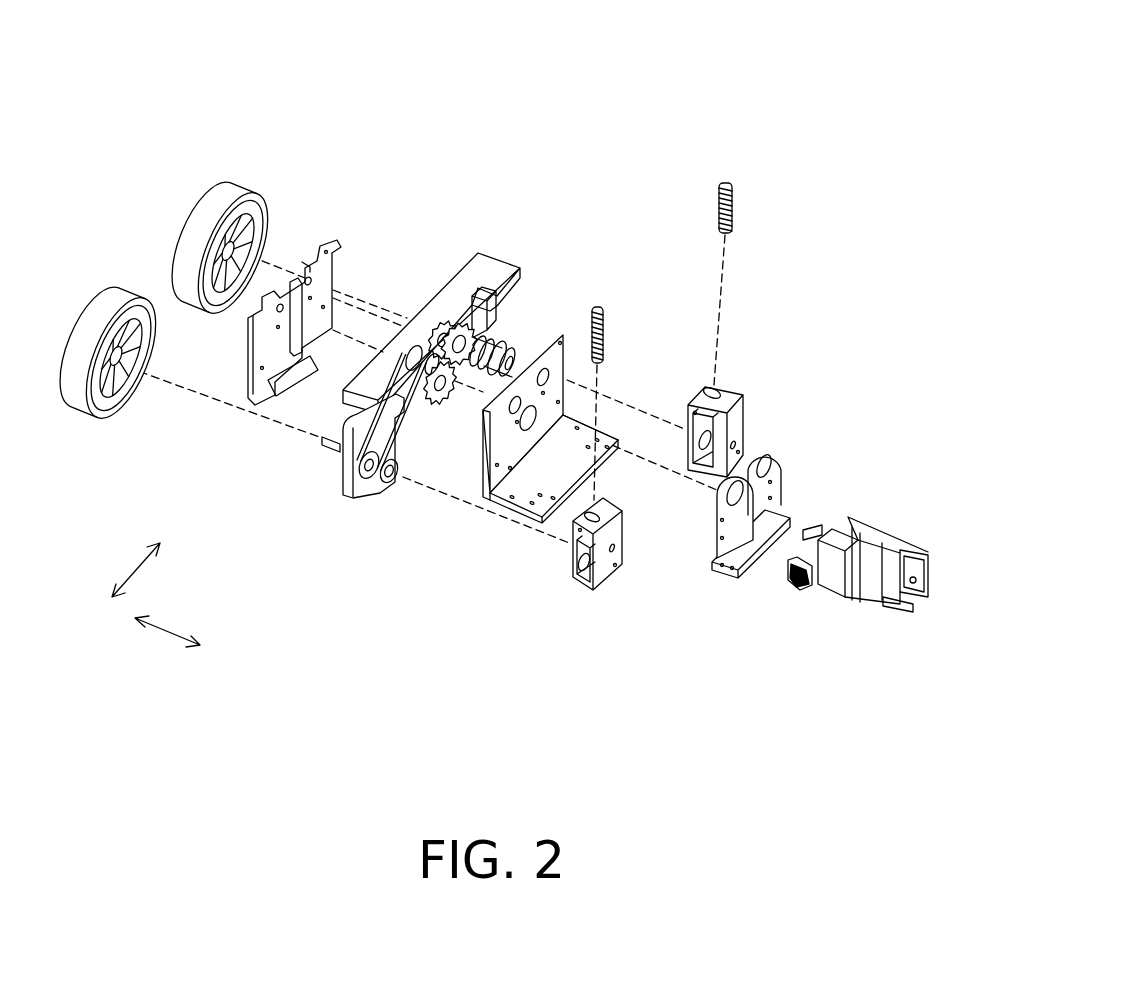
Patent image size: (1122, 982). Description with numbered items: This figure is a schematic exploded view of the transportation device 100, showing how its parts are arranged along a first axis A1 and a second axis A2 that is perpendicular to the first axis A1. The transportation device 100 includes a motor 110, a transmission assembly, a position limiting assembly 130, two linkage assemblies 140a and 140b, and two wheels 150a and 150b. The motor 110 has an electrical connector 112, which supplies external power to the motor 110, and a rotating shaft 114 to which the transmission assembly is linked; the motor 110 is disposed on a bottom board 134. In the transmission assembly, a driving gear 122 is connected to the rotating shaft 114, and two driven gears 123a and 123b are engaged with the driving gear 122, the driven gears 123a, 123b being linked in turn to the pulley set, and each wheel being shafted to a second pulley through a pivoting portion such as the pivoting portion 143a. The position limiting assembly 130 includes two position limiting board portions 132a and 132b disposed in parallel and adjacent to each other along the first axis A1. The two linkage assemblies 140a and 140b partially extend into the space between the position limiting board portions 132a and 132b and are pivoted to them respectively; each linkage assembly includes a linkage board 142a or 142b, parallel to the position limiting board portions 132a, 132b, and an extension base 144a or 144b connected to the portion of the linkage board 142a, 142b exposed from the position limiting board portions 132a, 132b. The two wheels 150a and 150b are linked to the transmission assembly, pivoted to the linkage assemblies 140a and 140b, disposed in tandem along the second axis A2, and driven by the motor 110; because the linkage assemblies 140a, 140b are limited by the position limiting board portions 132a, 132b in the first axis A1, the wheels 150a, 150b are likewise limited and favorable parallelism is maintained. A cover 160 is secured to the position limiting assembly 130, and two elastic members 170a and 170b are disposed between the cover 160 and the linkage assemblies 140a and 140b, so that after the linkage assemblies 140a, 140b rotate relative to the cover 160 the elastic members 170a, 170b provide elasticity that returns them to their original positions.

The transportation device 100 is at (100, 694).
The motor 110 is at (900, 545).
The electrical connector 112 is at (803, 595).
The rotating shaft 114 is at (806, 532).
The driving gear 122 is at (453, 405).
The driven gear 123a is at (430, 340).
The driven gear 123b is at (468, 322).
The position limiting assembly 130 is at (885, 17).
The position limiting board portion 132a is at (250, 367).
The position limiting board portion 132b is at (494, 448).
The bottom board 134 is at (525, 498).
The linkage assembly 140a is at (885, 110).
The linkage assembly 140b is at (885, 240).
The linkage board 142a is at (350, 445).
The linkage board 142b is at (493, 320).
The pivoting portion 143a is at (322, 440).
The extension base 144a is at (589, 590).
The extension base 144b is at (742, 407).
The wheel 150a is at (118, 290).
The wheel 150b is at (230, 184).
The cover 160 is at (487, 258).
The elastic member 170a is at (598, 304).
The elastic member 170b is at (725, 181).
The first axis A1 is at (186, 642).
The second axis A2 is at (156, 560).